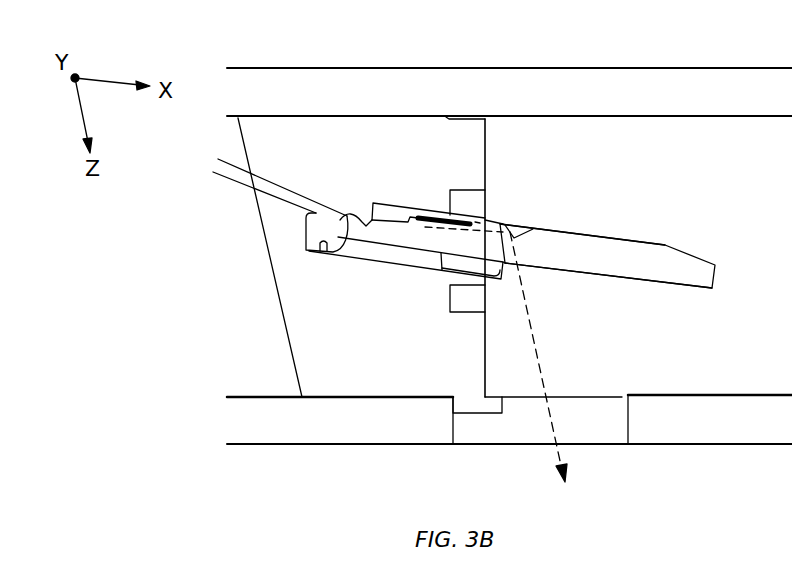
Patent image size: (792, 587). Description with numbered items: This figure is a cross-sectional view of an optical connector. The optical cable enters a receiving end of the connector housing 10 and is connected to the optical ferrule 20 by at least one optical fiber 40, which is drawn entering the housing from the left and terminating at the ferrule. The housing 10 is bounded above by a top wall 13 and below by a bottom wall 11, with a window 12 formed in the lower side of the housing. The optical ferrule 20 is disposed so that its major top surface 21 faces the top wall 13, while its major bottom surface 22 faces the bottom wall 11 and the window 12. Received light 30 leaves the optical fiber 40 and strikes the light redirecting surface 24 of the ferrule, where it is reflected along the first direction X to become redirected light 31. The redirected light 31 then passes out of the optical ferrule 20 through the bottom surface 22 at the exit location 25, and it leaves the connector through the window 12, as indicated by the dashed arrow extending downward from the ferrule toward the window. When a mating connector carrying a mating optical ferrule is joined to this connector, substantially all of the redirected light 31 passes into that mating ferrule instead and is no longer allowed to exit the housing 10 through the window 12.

The connector housing 10 is at (318, 68).
The bottom wall 11 is at (365, 436).
The window 12 is at (607, 430).
The top wall 13 is at (718, 78).
The optical ferrule 20 is at (708, 277).
The major top surface 21 is at (666, 245).
The major bottom surface 22 is at (670, 288).
The light redirecting surface 24 is at (514, 232).
The exit location 25 is at (517, 262).
The received light 30 is at (478, 222).
The redirected light 31 is at (558, 457).
The optical fiber 40 is at (298, 200).